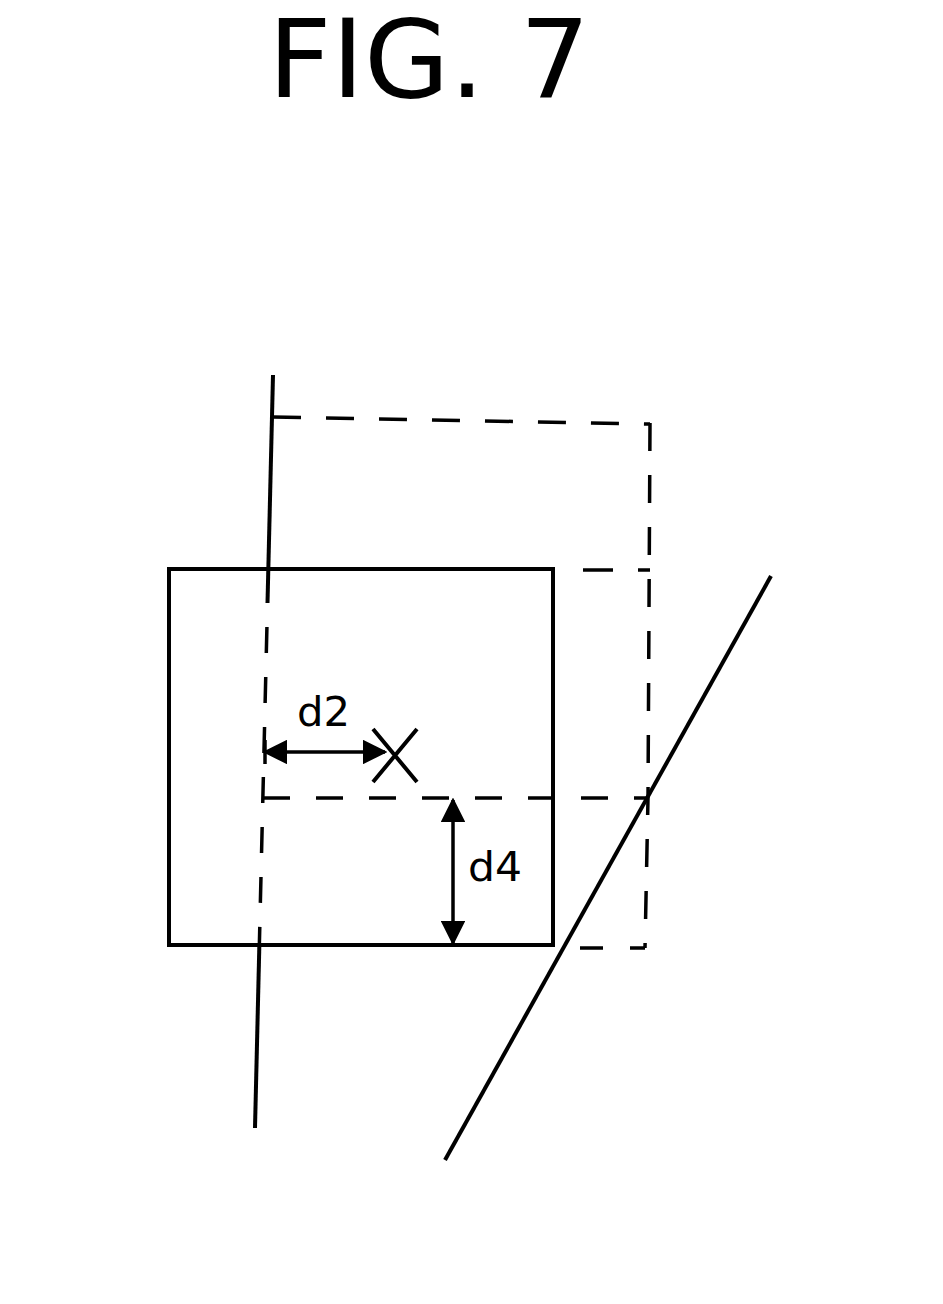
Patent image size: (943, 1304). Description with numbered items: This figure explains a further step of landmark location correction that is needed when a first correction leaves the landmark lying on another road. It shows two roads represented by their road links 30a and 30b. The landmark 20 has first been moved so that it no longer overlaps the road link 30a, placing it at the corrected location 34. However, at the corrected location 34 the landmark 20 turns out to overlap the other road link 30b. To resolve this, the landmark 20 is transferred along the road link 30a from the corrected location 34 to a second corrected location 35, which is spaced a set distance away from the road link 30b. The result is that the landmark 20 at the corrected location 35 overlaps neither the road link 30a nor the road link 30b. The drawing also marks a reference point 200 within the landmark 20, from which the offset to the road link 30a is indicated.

The landmark 20 is at (452, 569).
The road link 30a is at (268, 470).
The road link 30b is at (735, 640).
The corrected location 34 is at (643, 867).
The corrected location 35 is at (653, 481).
The reference point (X mark) 200 is at (387, 797).